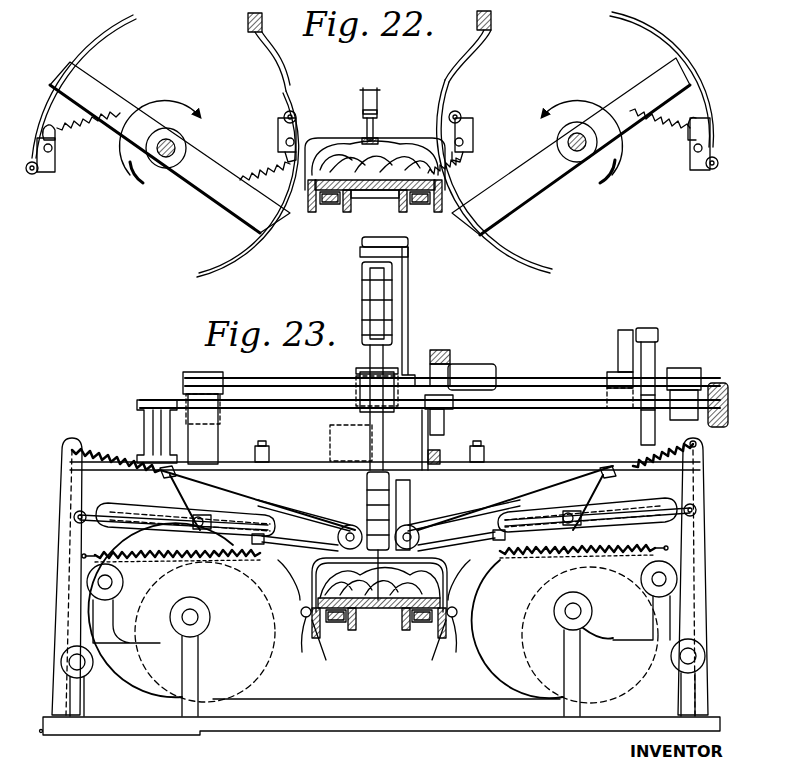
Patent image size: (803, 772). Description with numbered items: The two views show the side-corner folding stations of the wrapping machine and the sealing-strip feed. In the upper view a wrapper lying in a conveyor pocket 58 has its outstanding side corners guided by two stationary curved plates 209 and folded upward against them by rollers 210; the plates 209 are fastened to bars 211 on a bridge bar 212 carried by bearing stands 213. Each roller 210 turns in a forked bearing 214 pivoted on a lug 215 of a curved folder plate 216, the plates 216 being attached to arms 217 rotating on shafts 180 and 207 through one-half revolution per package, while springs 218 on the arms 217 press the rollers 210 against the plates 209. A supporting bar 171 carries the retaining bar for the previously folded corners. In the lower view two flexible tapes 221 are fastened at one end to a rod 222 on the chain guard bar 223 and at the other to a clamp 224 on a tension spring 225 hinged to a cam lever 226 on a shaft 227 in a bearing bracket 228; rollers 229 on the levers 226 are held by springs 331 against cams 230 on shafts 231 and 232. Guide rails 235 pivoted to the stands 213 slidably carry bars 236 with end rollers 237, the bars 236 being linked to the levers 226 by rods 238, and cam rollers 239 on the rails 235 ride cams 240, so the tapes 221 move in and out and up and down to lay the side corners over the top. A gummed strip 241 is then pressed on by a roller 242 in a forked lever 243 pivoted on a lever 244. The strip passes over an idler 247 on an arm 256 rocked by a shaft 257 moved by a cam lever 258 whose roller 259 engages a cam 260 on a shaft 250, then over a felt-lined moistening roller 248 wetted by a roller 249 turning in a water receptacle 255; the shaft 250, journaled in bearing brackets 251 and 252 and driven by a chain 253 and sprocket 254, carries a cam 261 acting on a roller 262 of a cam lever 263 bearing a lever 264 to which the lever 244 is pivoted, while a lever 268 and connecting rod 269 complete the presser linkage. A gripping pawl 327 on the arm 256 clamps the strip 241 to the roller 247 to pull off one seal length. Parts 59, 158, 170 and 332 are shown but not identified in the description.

In FIG. 22, the pocket 58 is at (410, 140).
In FIG. 23, the pocket 58 is at (346, 622).
In FIG. 22, the clamp blocks 59 is at (330, 206).
In FIG. 23, the clamp blocks 59 is at (338, 623).
In FIG. 22, the support bar 158 is at (348, 205).
In FIG. 22, the cushion 170 is at (376, 142).
In FIG. 22, the supporting bar 171 is at (370, 88).
In FIG. 22, the shaft 180 is at (170, 145).
In FIG. 22, the shaft 207 is at (577, 135).
In FIG. 22, the stationary curved plate 209 is at (273, 48).
In FIG. 22, the folding roller 210 is at (35, 175).
In FIG. 22, the bar 211 is at (262, 20).
In FIG. 23, the bar 211 is at (270, 454).
In FIG. 23, the bridge bar 212 is at (268, 472).
In FIG. 23, the bearing stand 213 is at (192, 496).
In FIG. 22, the forked bearing 214 is at (56, 168).
In FIG. 22, the lug 215 is at (50, 125).
In FIG. 22, the curved folder plate 216 is at (132, 20).
In FIG. 22, the arm 217 is at (150, 114).
In FIG. 22, the spring 218 is at (98, 122).
In FIG. 23, the flexible tape 221 is at (300, 510).
In FIG. 23, the rod 222 is at (303, 640).
In FIG. 23, the chain guard bar 223 is at (330, 660).
In FIG. 23, the clamp 224 is at (180, 476).
In FIG. 23, the tension spring 225 is at (104, 455).
In FIG. 23, the cam lever 226 is at (72, 440).
In FIG. 23, the shaft 227 is at (72, 664).
In FIG. 23, the bearing bracket 228 is at (165, 735).
In FIG. 23, the roller 229 is at (87, 582).
In FIG. 23, the cam 230 is at (282, 690).
In FIG. 23, the shaft 231 is at (180, 618).
In FIG. 23, the shaft 232 is at (580, 612).
In FIG. 23, the guide rail 235 is at (245, 514).
In FIG. 23, the slide bar 236 is at (305, 546).
In FIG. 23, the roller 237 is at (350, 525).
In FIG. 23, the rod 238 is at (140, 492).
In FIG. 23, the cam roller 239 is at (178, 558).
In FIG. 23, the cam 240 is at (108, 618).
In FIG. 23, the gummed strip 241 is at (380, 610).
In FIG. 23, the presser roller 242 is at (367, 478).
In FIG. 23, the forked lever 243 is at (398, 510).
In FIG. 23, the lever 244 is at (383, 440).
In FIG. 23, the idler roller 247 is at (362, 279).
In FIG. 23, the moistening roller 248 is at (362, 366).
In FIG. 23, the roller 249 is at (358, 378).
In FIG. 23, the shaft 250 is at (137, 410).
In FIG. 23, the bearing bracket 251 is at (188, 400).
In FIG. 23, the bearing bracket 252 is at (698, 443).
In FIG. 23, the chain 253 is at (728, 385).
In FIG. 23, the sprocket 254 is at (705, 375).
In FIG. 23, the water receptacle 255 is at (330, 430).
In FIG. 23, the rocking arm 256 is at (408, 278).
In FIG. 23, the shaft 257 is at (545, 377).
In FIG. 23, the cam lever 258 is at (618, 340).
In FIG. 23, the roller 259 is at (658, 333).
In FIG. 23, the cam 260 is at (656, 363).
In FIG. 23, the cam 261 is at (444, 430).
In FIG. 23, the roller 262 is at (438, 350).
In FIG. 23, the cam lever 263 is at (465, 362).
In FIG. 23, the lever 264 is at (452, 410).
In FIG. 23, the lever 268 is at (425, 470).
In FIG. 23, the connecting rod 269 is at (440, 456).
In FIG. 23, the gripping pawl 327 is at (362, 250).
In FIG. 23, the spring 331 is at (112, 553).
In FIG. 23, the bearing block 332 is at (205, 372).